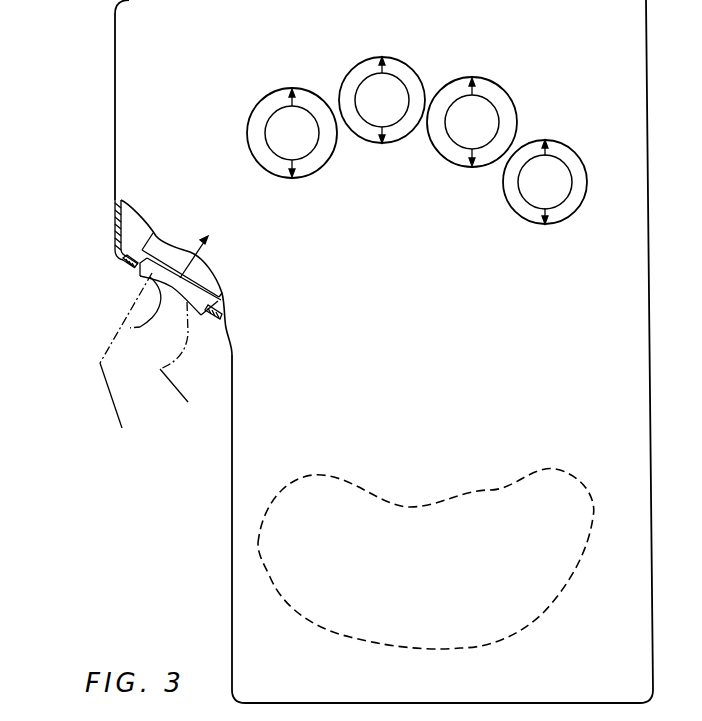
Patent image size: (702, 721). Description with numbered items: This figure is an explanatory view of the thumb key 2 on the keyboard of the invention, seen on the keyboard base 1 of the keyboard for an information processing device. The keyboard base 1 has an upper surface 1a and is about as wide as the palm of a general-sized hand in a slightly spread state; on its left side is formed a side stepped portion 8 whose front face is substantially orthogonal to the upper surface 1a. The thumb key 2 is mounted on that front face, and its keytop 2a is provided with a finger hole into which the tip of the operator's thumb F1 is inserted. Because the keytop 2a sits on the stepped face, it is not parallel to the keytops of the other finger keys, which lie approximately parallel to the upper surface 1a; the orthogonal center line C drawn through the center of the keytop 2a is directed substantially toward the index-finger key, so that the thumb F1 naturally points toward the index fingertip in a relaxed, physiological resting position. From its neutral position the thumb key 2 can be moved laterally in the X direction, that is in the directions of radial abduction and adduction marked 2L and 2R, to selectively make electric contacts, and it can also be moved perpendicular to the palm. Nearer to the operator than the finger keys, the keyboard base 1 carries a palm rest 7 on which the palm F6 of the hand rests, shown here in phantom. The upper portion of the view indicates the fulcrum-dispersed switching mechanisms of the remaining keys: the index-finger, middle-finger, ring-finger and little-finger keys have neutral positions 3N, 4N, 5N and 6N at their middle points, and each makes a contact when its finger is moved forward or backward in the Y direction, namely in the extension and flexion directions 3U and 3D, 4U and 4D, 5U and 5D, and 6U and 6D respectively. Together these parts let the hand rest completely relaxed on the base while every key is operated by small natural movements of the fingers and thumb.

The keyboard base 1 is at (232, 530).
The upper surface 1a is at (273, 405).
The thumb key 2 is at (123, 258).
The radial abduction direction of thumb key 2L is at (112, 237).
The adduction direction of thumb key 2R is at (230, 310).
The keytop of thumb key 2a is at (148, 300).
The side stepped portion 8 is at (133, 270).
The neutral position of index-finger key 3N is at (283, 131).
The extension direction of index-finger key 3U is at (288, 97).
The flexion direction of index-finger key 3D is at (298, 170).
The neutral position of middle-finger key 4N is at (377, 105).
The extension direction of middle-finger key 4U is at (382, 62).
The flexion direction of middle-finger key 4D is at (390, 133).
The neutral position of ring-finger key 5N is at (476, 128).
The extension direction of ring-finger key 5U is at (476, 88).
The flexion direction of ring-finger key 5D is at (470, 158).
The neutral position of little-finger key 6N is at (549, 182).
The extension direction of little-finger key 6U is at (553, 141).
The flexion direction of little-finger key 6D is at (550, 218).
The palm rest 7 is at (497, 507).
The thumb F1 is at (154, 352).
The palm F6 is at (368, 522).
The orthogonal center line C is at (163, 319).